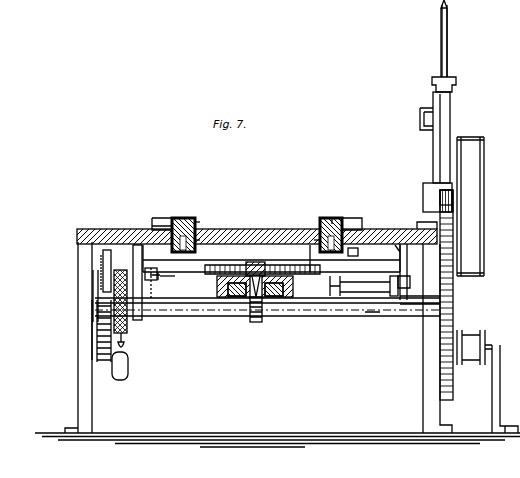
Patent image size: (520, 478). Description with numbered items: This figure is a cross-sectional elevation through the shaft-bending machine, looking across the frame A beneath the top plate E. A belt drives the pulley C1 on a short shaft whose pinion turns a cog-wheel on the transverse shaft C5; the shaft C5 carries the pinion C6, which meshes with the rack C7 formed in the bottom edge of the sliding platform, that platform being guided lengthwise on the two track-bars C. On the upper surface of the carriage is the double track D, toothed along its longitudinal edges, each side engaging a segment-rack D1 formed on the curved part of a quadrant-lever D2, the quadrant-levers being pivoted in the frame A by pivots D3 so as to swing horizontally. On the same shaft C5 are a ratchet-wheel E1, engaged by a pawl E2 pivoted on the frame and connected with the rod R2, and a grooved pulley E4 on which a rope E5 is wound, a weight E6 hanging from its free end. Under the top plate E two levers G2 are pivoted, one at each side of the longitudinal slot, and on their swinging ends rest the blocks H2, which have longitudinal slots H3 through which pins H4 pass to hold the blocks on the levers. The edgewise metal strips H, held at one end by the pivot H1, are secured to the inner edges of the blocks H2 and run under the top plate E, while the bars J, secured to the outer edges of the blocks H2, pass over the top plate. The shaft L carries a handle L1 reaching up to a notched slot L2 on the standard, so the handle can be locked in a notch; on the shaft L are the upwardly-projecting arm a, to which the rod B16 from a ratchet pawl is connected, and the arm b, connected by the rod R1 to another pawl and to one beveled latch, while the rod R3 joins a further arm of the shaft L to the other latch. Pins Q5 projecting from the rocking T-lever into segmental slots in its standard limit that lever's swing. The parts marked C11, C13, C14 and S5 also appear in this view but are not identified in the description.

The frame A is at (436, 380).
The top plate E is at (119, 232).
The metal strips or bars H is at (184, 220).
The pivot H1 is at (334, 220).
The blocks H2 is at (307, 237).
The longitudinal slots H3 is at (206, 239).
The pins H4 is at (206, 218).
The metal strips or bars J is at (162, 219).
The ratchet-wheel E1 is at (100, 362).
The pawl E2 is at (101, 272).
The grooved pulley E4 is at (127, 332).
The rope E5 is at (124, 345).
The weight E6 is at (128, 366).
The rod R2 is at (96, 296).
The rod R3 is at (176, 277).
The rod R1 is at (365, 284).
The track-bars C is at (97, 330).
The pulley C1 is at (232, 298).
The transverse shaft C5 is at (306, 308).
The pinion C6 is at (256, 322).
The rack C7 is at (250, 298).
The drum C11 is at (470, 206).
The housing C13 is at (430, 212).
The rack C14 is at (453, 300).
The double track D is at (256, 264).
The segment-rack D1 is at (236, 266).
The quadrant-lever D2 is at (165, 263).
The pivots D3 is at (355, 258).
The levers G2 is at (170, 258).
The arm a is at (272, 283).
The arm b is at (334, 286).
The rod B16 is at (406, 280).
The shaft L is at (376, 302).
The handle L1 is at (447, 42).
The notched slot L2 is at (456, 80).
The pins Q5 is at (434, 156).
The pulley S5 is at (487, 381).